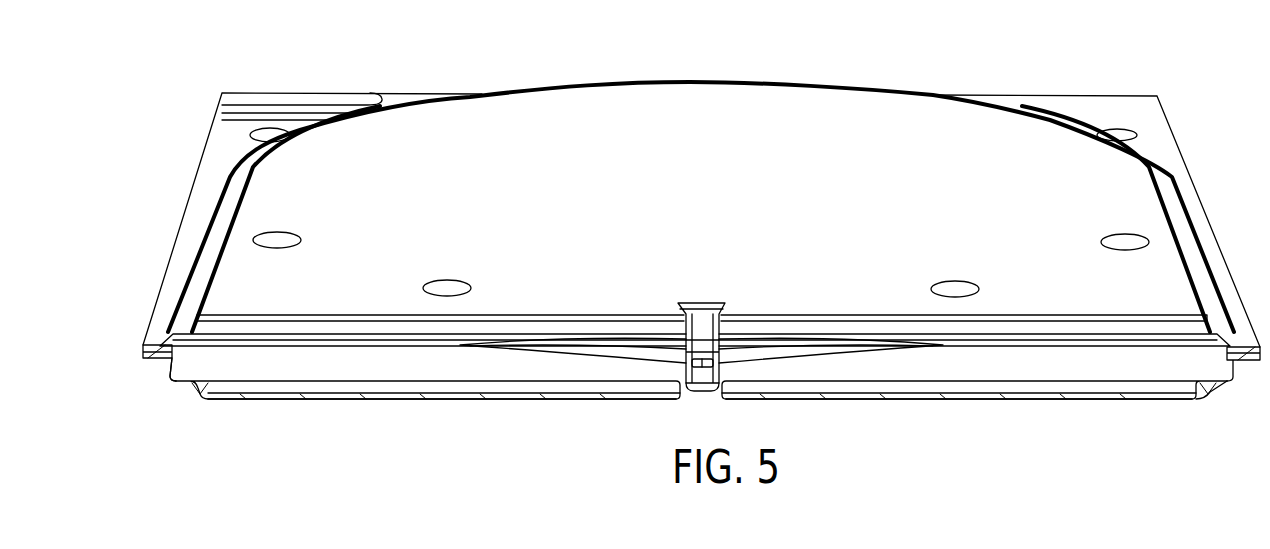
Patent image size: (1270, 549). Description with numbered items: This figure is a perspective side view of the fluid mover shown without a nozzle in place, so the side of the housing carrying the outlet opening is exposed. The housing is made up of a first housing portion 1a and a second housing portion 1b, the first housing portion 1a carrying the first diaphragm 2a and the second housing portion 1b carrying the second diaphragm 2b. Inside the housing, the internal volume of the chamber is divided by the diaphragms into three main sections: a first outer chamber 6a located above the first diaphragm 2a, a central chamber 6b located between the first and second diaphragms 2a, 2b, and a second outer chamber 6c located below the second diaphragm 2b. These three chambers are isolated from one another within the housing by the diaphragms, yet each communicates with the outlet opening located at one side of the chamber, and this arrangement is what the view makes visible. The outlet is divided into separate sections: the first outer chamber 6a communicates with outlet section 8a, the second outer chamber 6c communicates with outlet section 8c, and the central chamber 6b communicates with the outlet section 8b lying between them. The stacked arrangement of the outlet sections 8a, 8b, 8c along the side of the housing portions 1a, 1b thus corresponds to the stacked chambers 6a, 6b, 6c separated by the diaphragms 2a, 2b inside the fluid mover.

The first housing portion 1a is at (788, 106).
The second housing portion 1b is at (793, 400).
The first diaphragm 2a is at (237, 335).
The second diaphragm 2b is at (302, 380).
The first outer chamber 6a is at (1140, 328).
The central chamber 6b is at (1110, 363).
The second outer chamber 6c is at (1005, 387).
The outlet section 8a is at (283, 330).
The outlet section 8b is at (508, 362).
The outlet section 8c is at (463, 385).